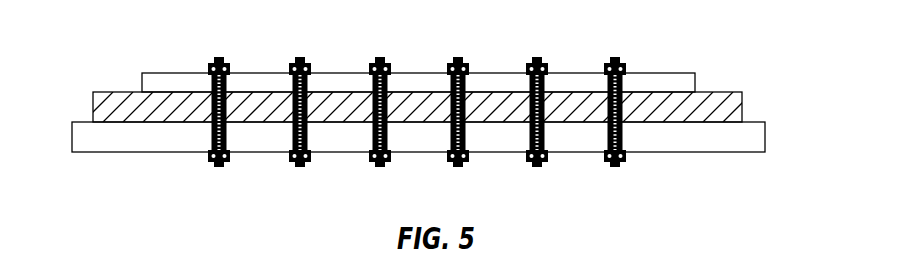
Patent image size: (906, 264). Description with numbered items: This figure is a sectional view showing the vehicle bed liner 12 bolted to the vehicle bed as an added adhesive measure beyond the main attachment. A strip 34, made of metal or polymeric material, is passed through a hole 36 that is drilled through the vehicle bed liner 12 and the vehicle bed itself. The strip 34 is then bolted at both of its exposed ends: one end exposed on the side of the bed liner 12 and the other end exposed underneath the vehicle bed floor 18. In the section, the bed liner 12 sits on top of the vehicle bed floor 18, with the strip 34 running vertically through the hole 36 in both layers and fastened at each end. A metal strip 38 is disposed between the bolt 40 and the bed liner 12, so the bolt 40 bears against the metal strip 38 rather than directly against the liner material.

The vehicle bed liner 12 is at (742, 108).
The vehicle bed floor 18 is at (765, 137).
The strip 34 is at (213, 125).
The hole 36 is at (213, 145).
The metal strip 38 is at (219, 58).
The bolt 40 is at (697, 82).